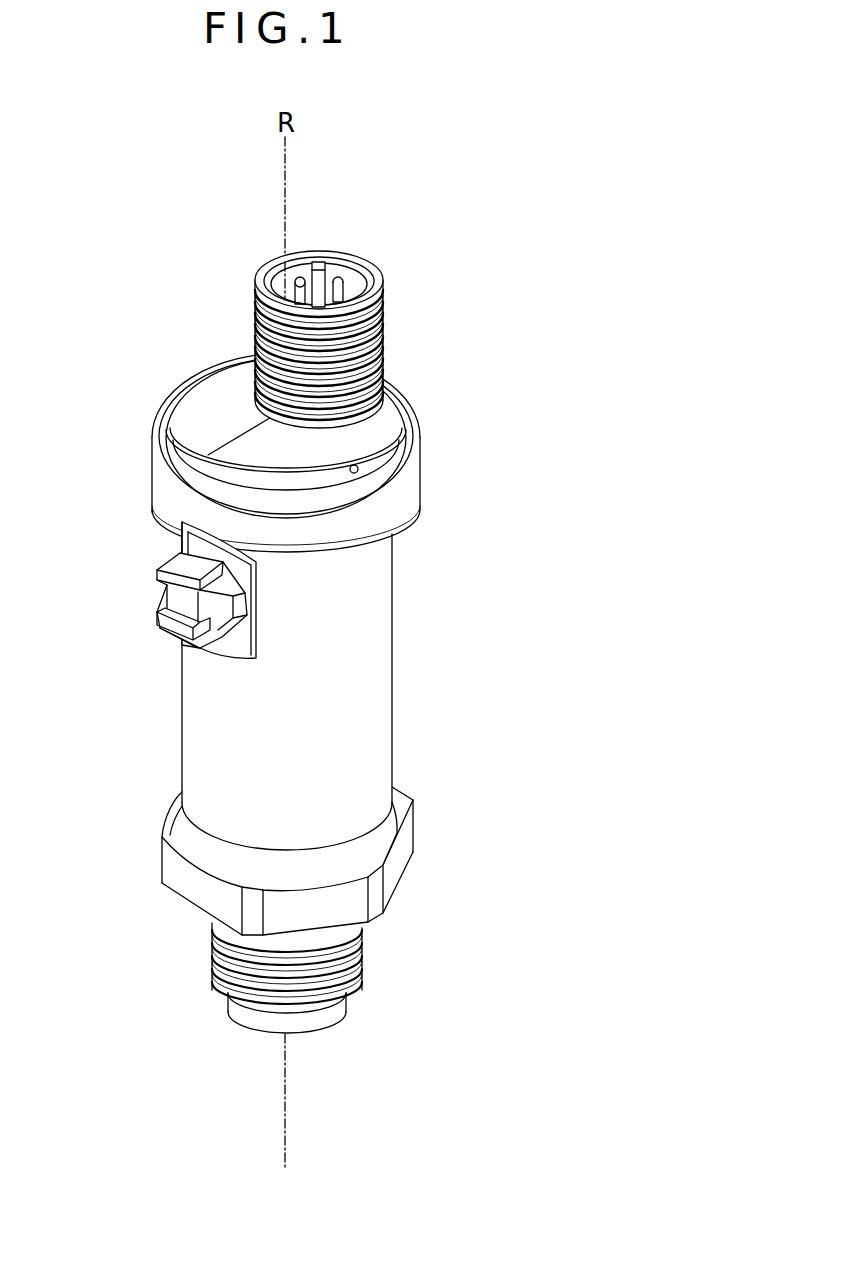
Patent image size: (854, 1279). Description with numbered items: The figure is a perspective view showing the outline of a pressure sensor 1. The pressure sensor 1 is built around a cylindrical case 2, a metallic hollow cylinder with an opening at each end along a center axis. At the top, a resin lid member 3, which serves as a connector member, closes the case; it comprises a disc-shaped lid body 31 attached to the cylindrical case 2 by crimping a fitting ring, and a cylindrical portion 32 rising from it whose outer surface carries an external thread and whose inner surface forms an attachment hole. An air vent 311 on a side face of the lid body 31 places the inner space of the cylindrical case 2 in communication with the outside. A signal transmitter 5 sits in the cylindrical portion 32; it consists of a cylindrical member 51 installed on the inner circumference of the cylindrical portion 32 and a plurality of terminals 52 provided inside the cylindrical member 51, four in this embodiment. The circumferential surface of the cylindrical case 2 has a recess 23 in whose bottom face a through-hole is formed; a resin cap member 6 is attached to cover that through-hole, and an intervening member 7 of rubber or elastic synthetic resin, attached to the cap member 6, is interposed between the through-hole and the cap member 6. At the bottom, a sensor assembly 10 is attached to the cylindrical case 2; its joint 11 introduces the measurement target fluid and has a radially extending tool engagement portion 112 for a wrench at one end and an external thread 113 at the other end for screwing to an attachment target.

The pressure sensor 1 is at (453, 260).
The cylindrical case 2 is at (377, 622).
The lid member 3 is at (415, 358).
The signal transmitter 5 is at (307, 235).
The cap member 6 is at (168, 640).
The intervening member 7 is at (190, 548).
The sensor assembly 10 is at (423, 833).
The joint 11 is at (203, 925).
The recess 23 is at (240, 577).
The lid body 31 is at (194, 402).
The cylindrical portion 32 is at (385, 338).
The cylindrical member 51 is at (340, 263).
The terminal 52 is at (310, 270).
The tool engagement portion 112 is at (188, 873).
The external thread 113 is at (362, 945).
The air vent 311 is at (361, 468).